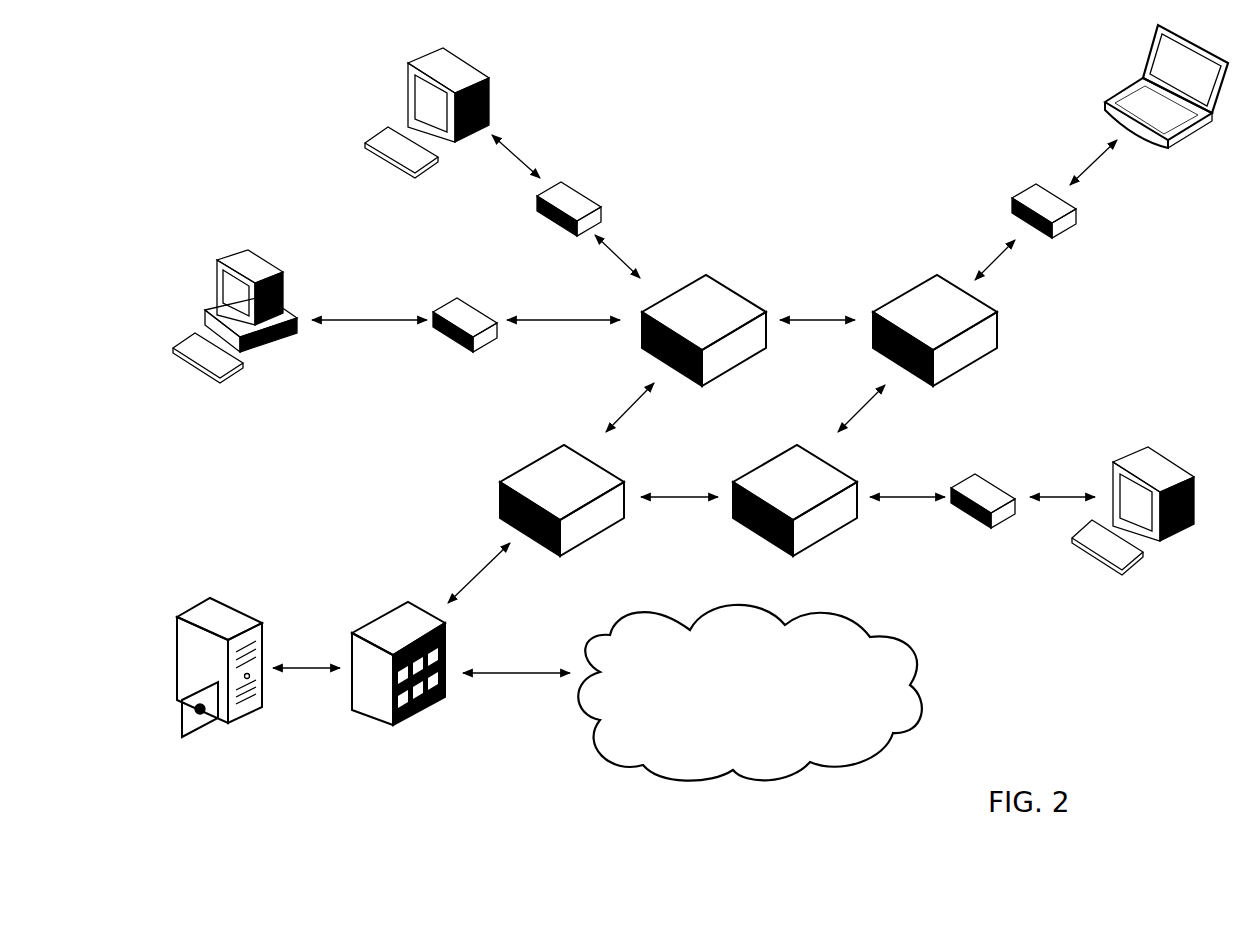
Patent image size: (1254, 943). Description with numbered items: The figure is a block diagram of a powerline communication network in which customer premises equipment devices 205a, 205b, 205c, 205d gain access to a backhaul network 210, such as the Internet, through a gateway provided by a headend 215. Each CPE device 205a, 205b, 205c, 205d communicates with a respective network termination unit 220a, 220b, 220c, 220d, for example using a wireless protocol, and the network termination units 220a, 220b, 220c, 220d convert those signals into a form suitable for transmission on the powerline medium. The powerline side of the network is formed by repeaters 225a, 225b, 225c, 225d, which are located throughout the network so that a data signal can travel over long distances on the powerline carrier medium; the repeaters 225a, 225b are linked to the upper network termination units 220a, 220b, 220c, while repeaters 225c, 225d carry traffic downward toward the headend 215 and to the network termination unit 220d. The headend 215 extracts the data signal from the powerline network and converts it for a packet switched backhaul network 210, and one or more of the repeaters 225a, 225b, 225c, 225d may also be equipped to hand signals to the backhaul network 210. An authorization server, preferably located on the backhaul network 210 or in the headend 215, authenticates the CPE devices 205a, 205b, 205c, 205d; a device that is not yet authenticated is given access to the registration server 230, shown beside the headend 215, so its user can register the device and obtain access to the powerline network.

The customer premises equipment device 205a is at (262, 265).
The customer premises equipment device 205b is at (478, 72).
The customer premises equipment device 205c is at (1128, 85).
The customer premises equipment device 205d is at (1158, 452).
The network termination unit 220a is at (468, 300).
The network termination unit 220b is at (578, 190).
The network termination unit 220c is at (1072, 230).
The network termination unit 220d is at (986, 480).
The repeater 225a is at (727, 288).
The repeater 225b is at (913, 290).
The repeater 225c is at (834, 464).
The repeater 225d is at (602, 464).
The backhaul network 210 is at (886, 637).
The headend 215 is at (390, 610).
The registration server 230 is at (225, 607).